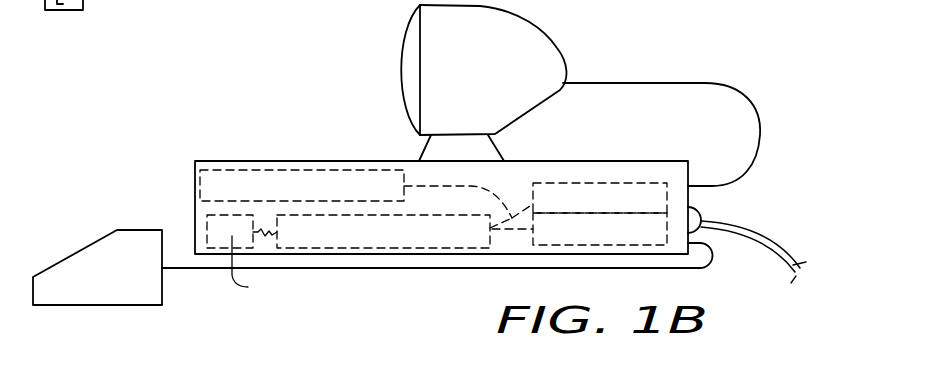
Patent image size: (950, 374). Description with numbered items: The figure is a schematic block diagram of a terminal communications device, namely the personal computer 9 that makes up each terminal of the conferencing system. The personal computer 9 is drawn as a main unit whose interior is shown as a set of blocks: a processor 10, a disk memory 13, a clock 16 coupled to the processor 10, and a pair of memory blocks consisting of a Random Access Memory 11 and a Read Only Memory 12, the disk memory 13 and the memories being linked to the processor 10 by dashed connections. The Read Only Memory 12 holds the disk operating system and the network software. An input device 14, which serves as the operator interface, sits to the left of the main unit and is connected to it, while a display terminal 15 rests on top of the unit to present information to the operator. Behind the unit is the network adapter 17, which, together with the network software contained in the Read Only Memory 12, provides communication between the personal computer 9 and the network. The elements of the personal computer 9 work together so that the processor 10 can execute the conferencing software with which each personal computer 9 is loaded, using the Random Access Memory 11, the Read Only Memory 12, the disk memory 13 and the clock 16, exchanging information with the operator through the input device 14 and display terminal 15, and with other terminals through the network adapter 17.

The personal computer 9 is at (203, 298).
The processor 10 is at (492, 236).
The Random Access Memory 11 is at (548, 186).
The Read Only Memory 12 is at (540, 236).
The disk memory 13 is at (199, 183).
The input device 14 is at (101, 238).
The display terminal 15 is at (401, 48).
The clock 16 is at (707, 213).
The network adapter 17 is at (733, 181).